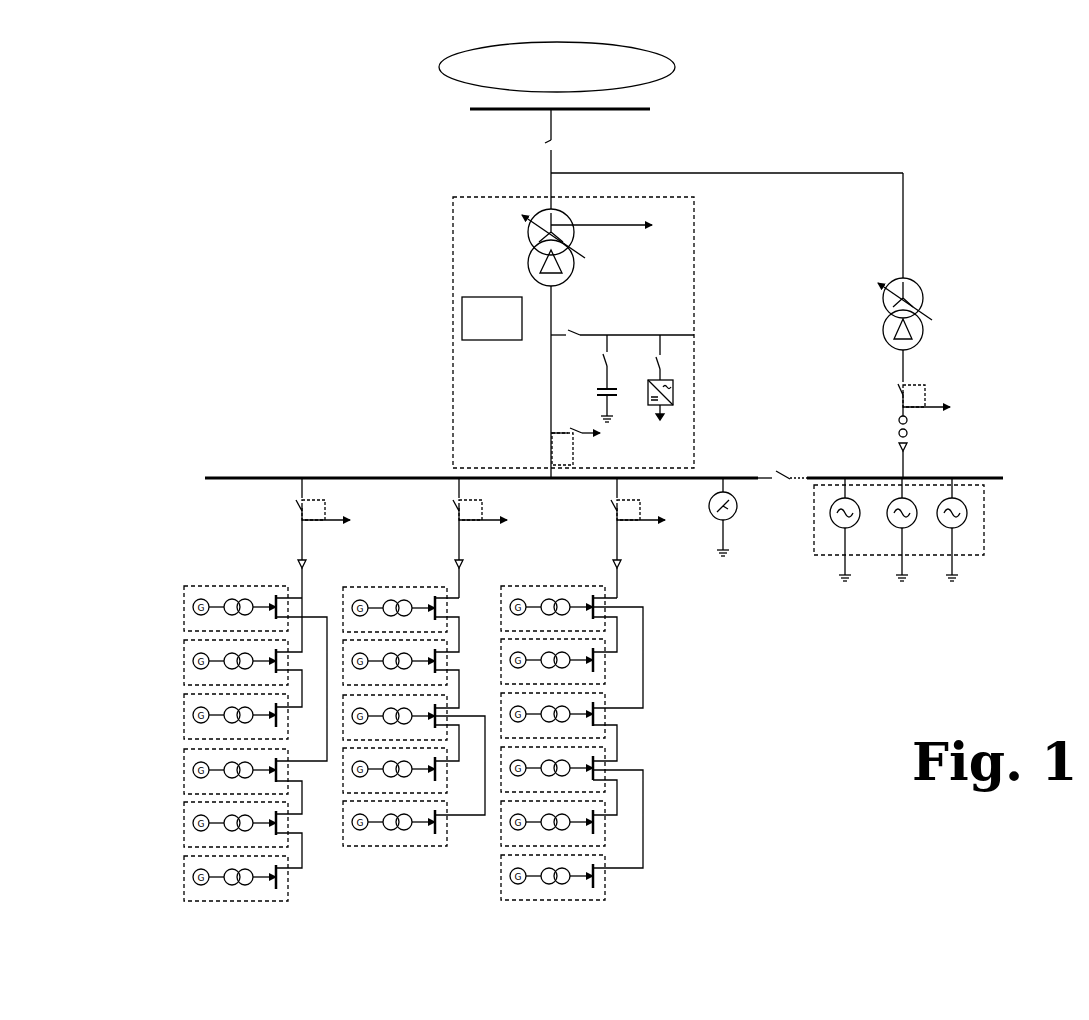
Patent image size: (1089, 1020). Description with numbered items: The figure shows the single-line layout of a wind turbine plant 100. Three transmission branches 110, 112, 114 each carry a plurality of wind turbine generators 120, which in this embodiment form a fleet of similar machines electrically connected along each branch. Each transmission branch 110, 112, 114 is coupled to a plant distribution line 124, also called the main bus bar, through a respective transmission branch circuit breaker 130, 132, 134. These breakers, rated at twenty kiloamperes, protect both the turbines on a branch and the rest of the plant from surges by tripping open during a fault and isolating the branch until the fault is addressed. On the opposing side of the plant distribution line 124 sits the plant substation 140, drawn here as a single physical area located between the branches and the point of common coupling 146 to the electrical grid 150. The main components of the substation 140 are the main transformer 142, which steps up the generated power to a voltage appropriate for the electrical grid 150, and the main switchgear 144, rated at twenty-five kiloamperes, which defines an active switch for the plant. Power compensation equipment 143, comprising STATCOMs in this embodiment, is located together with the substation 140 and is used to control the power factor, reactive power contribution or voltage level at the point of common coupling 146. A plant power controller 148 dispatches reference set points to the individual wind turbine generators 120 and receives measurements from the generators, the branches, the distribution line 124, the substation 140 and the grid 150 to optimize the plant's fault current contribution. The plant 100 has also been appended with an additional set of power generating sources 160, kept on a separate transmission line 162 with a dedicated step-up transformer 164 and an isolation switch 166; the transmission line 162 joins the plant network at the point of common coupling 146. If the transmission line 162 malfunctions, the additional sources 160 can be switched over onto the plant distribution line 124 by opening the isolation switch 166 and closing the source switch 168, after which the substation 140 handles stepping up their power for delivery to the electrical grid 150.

The wind turbine plant 100 is at (285, 175).
The transmission branch 110 is at (212, 699).
The transmission branch 112 is at (410, 592).
The transmission branch 114 is at (572, 592).
The wind turbine generator 120 is at (198, 607).
The plant distribution line 124 is at (584, 479).
The transmission branch circuit breaker 130 is at (302, 510).
The transmission branch circuit breaker 132 is at (459, 510).
The transmission branch circuit breaker 134 is at (617, 510).
The plant substation 140 is at (694, 253).
The main transformer 142 is at (530, 242).
The power compensation equipment 143 is at (634, 440).
The main switchgear 144 is at (552, 445).
The point of common coupling 146 is at (583, 114).
The plant power controller 148 is at (462, 330).
The electrical grid 150 is at (665, 71).
The additional set of power generating sources 160 is at (984, 528).
The transmission line 162 is at (905, 185).
The step-up transformer 164 is at (924, 300).
The isolation switch 166 is at (926, 387).
The source switch 168 is at (770, 470).